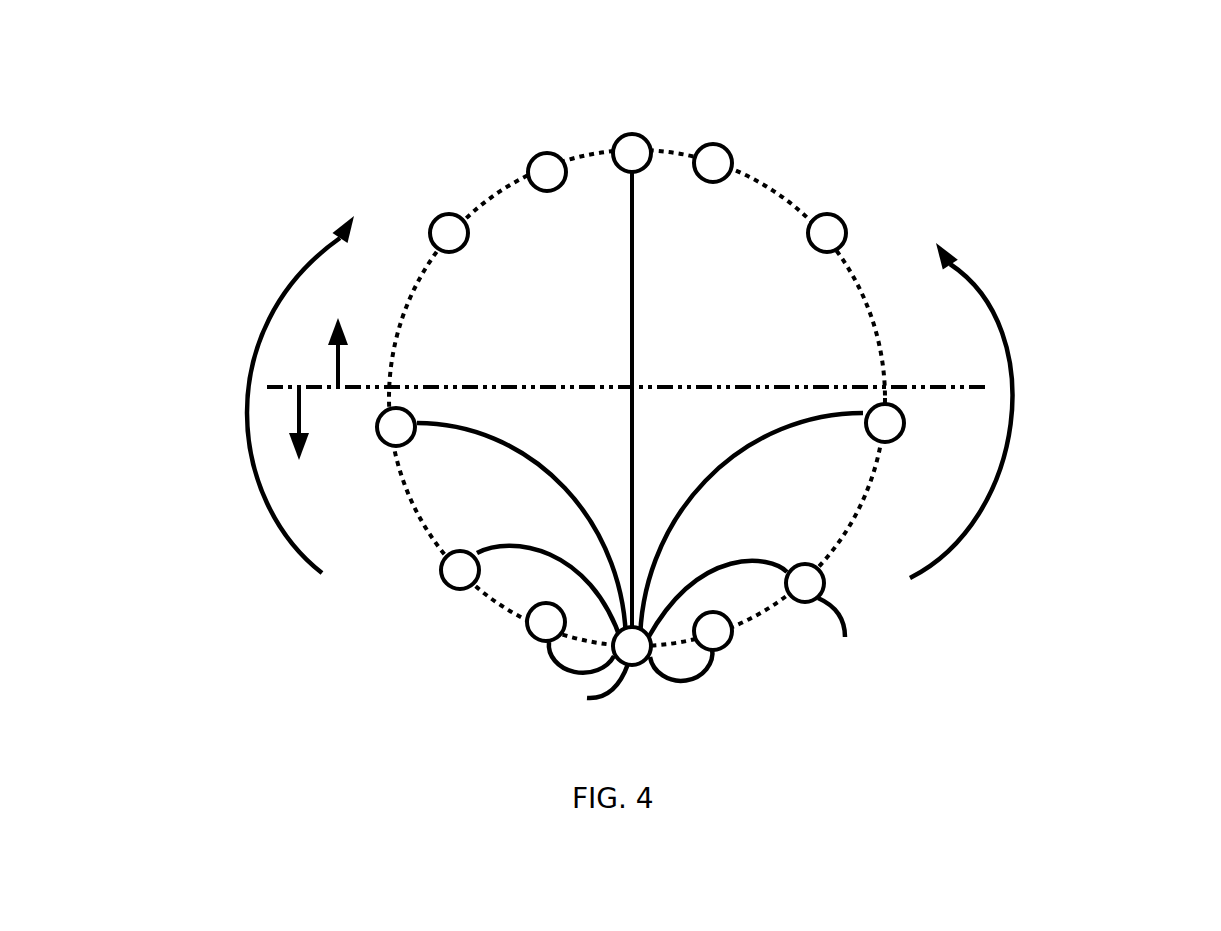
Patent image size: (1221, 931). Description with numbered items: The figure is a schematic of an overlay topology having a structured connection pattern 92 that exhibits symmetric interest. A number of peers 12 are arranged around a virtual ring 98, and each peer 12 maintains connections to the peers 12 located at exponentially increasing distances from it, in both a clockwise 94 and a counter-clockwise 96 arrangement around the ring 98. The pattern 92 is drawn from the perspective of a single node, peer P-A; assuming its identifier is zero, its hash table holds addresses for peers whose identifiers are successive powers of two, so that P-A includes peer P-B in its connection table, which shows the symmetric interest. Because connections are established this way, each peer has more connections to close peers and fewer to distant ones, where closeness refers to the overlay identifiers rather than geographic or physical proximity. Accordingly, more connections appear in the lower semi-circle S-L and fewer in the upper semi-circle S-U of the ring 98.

The peer 12 is at (535, 155).
The structured connection pattern 92 is at (1050, 166).
The clockwise arrangement 94 is at (248, 367).
The counter-clockwise arrangement 96 is at (1013, 377).
The virtual ring 98 is at (750, 173).